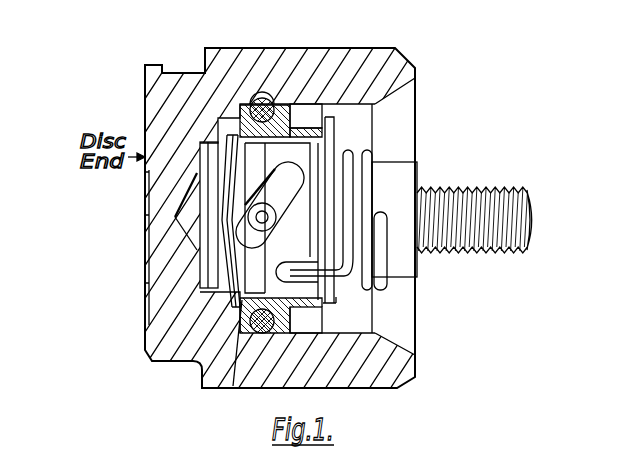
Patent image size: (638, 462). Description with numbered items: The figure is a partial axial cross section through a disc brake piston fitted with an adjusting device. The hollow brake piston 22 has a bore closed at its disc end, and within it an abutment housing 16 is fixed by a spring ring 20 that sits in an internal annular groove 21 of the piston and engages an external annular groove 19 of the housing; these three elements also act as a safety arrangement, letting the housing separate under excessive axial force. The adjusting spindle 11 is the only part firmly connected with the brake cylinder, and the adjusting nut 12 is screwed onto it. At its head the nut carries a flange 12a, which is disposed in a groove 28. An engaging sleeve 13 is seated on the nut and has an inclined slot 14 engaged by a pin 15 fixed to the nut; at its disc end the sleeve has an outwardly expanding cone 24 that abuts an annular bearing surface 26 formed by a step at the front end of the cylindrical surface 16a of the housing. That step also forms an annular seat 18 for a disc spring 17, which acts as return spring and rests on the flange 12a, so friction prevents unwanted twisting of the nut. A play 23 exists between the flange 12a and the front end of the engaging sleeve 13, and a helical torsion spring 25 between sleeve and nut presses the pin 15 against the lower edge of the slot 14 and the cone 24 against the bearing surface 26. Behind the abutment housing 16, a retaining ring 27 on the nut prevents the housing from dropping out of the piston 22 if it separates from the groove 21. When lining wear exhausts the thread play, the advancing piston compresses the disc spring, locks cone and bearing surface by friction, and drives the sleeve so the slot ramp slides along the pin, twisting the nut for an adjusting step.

The adjusting spindle 11 is at (461, 187).
The adjusting nut 12 is at (391, 164).
The flange 12a is at (212, 218).
The engaging sleeve 13 is at (320, 148).
The inclined slot 14 is at (293, 178).
The pin 15 is at (257, 222).
The abutment housing 16 is at (270, 315).
The cylindrical surface 16a is at (328, 305).
The disc spring 17 is at (210, 250).
The annular seat 18 is at (255, 98).
The external annular groove 19 is at (294, 128).
The spring ring 20 is at (272, 105).
The internal annular groove 21 is at (262, 99).
The brake piston 22 is at (300, 380).
The play 23 is at (166, 279).
The cone 24 is at (243, 386).
The helical torsion spring 25 is at (378, 289).
The annular bearing surface 26 is at (287, 118).
The retaining ring 27 is at (337, 121).
The groove 28 is at (200, 272).